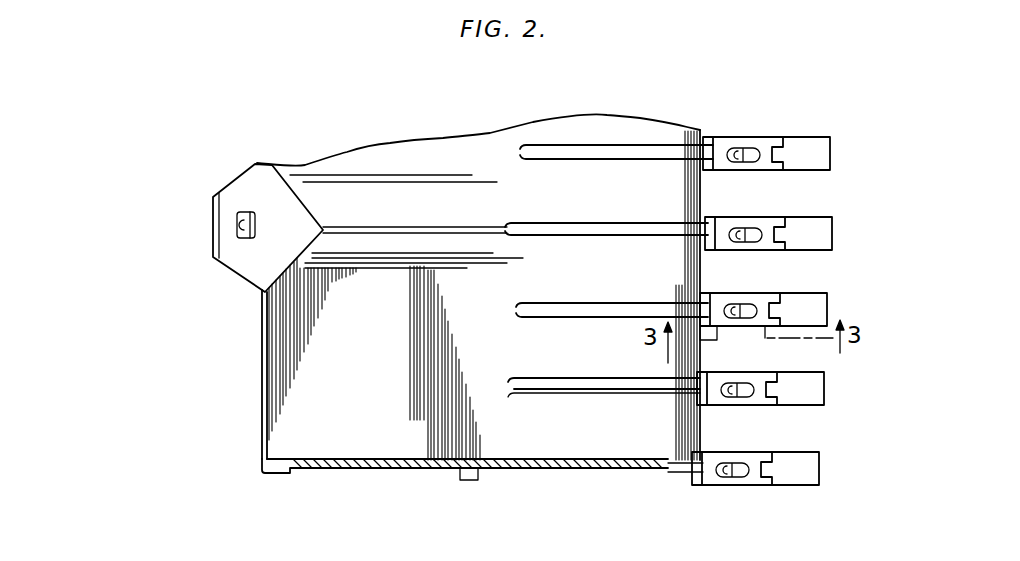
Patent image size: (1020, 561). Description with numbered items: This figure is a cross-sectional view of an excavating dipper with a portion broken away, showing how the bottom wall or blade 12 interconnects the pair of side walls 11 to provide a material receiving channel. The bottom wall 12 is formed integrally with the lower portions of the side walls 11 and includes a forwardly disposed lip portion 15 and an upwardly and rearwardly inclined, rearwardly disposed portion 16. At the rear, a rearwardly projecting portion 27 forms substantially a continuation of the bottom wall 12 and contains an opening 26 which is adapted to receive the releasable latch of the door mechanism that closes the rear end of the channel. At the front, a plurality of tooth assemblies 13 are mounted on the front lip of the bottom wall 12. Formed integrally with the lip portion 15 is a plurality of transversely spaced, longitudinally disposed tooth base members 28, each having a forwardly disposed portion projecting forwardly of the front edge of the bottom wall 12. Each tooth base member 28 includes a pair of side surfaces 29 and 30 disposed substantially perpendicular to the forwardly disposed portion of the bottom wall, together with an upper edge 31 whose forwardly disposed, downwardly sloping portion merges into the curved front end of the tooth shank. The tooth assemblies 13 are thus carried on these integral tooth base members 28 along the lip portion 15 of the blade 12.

The side walls 11 is at (398, 470).
The bottom wall or blade 12 is at (308, 392).
The tooth assemblies 13 is at (832, 157).
The lip portion 15 is at (640, 425).
The rearwardly disposed portion 16 is at (305, 338).
The opening 26 is at (237, 222).
The rearwardly projecting portion 27 is at (247, 263).
The tooth base members 28 is at (600, 153).
The side surface 29 is at (530, 378).
The side surface 30 is at (545, 394).
The upper edge 31 is at (610, 390).